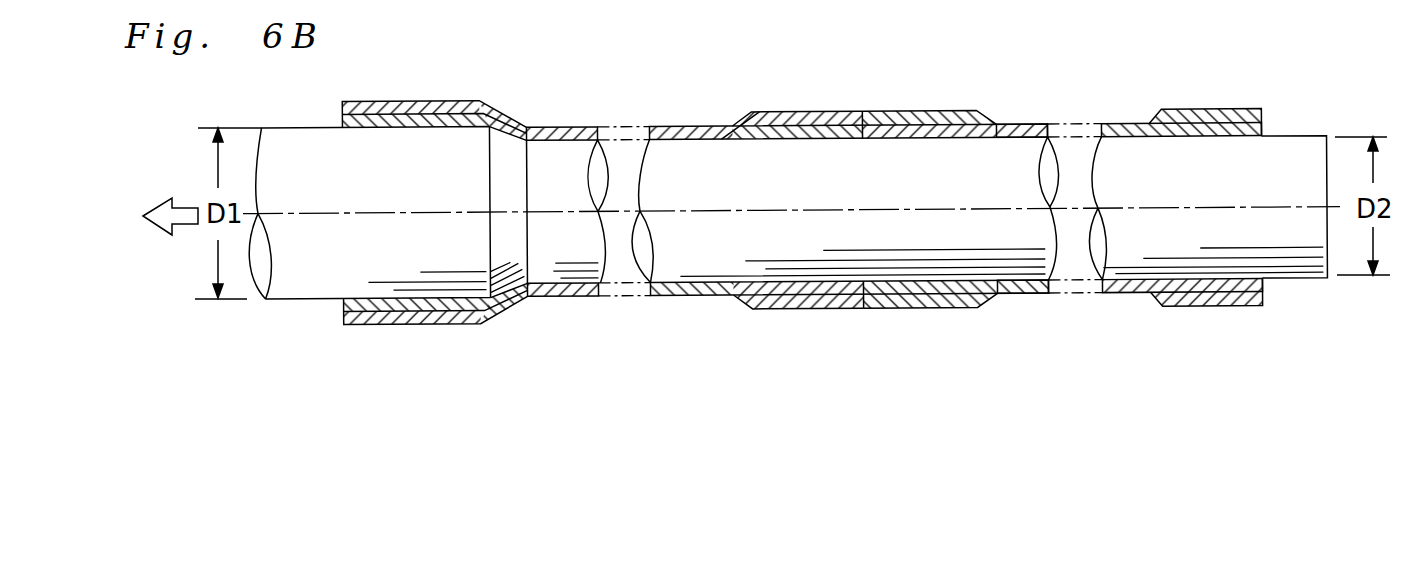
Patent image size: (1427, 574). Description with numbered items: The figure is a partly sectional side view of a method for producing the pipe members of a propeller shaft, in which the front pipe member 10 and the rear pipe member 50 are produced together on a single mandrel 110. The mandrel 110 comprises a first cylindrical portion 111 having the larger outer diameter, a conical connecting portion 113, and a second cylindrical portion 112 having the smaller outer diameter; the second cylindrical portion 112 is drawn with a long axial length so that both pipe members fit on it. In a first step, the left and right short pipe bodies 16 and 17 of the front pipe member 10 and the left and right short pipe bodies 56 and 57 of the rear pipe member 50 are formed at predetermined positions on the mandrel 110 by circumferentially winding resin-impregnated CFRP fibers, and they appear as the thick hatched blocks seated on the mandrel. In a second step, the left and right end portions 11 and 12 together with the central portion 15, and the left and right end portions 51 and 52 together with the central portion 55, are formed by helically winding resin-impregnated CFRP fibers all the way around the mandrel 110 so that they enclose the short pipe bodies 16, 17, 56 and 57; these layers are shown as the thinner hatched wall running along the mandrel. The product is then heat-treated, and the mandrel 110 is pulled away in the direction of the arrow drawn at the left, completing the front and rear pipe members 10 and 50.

The front pipe member 10 is at (688, 125).
The left end portion 11 is at (377, 100).
The right end portion 12 is at (785, 112).
The central portion 15 is at (547, 127).
The left short pipe body 16 is at (424, 117).
The right short pipe body 17 is at (805, 128).
The rear pipe member 50 is at (1034, 125).
The left end portion 51 is at (893, 112).
The right end portion 52 is at (1193, 108).
The central portion 55 is at (1111, 127).
The left short pipe body 56 is at (925, 128).
The right short pipe body 57 is at (1225, 128).
The mandrel 110 is at (1298, 130).
The first cylindrical portion 111 is at (294, 283).
The second cylindrical portion 112 is at (695, 257).
The conical connecting portion 113 is at (507, 262).